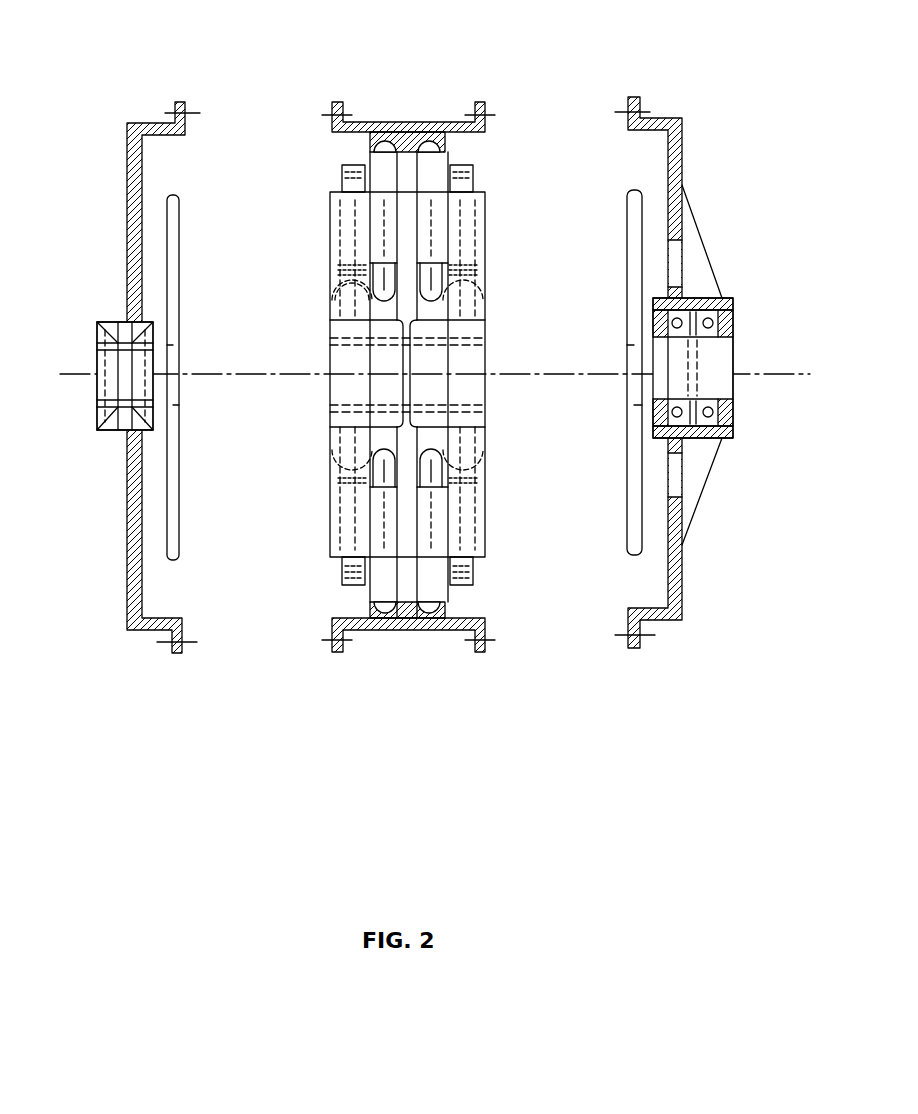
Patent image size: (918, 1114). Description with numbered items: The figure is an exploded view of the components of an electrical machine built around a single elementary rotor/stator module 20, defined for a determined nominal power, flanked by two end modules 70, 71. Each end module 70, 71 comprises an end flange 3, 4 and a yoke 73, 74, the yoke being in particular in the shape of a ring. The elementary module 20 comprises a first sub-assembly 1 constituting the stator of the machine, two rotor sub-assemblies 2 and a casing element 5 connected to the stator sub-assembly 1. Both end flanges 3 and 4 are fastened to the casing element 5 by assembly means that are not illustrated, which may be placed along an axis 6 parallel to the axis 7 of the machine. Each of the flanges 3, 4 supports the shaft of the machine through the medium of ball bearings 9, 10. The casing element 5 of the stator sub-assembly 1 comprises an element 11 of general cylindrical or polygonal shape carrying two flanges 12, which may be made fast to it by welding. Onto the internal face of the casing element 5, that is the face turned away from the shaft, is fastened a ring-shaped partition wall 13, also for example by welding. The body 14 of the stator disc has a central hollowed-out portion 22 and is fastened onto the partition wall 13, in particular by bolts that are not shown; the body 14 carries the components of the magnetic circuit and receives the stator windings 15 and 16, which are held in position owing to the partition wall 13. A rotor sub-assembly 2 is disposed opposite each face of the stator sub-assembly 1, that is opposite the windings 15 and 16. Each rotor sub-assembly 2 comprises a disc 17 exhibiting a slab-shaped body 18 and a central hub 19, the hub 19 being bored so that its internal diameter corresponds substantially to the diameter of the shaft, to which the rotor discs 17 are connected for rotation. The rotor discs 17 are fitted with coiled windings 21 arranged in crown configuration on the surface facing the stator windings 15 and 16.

The stator sub-assembly 1 is at (358, 153).
The rotor sub-assembly 2 is at (326, 272).
The end flange 3 is at (127, 188).
The end flange 4 is at (682, 178).
The casing element 5 is at (400, 663).
The axis 6 is at (488, 108).
The axis of the machine 7 is at (768, 376).
The ball bearing 9 is at (100, 431).
The ball bearing 10 is at (735, 313).
The element of the casing 11 is at (381, 628).
The flange 12 is at (338, 654).
The partition wall 13 is at (404, 628).
The body of the stator disc 14 is at (408, 213).
The stator winding 15 is at (374, 590).
The stator winding 16 is at (440, 590).
The rotor disc 17 is at (327, 563).
The slab-shaped body 18 is at (330, 512).
The central hub 19 is at (356, 394).
The elementary rotor/stator module 20 is at (418, 92).
The coiled windings 21 is at (345, 178).
The central hollowed-out portion 22 is at (346, 315).
The end module 70 is at (149, 110).
The end module 71 is at (665, 92).
The yoke 73 is at (180, 215).
The yoke 74 is at (628, 218).